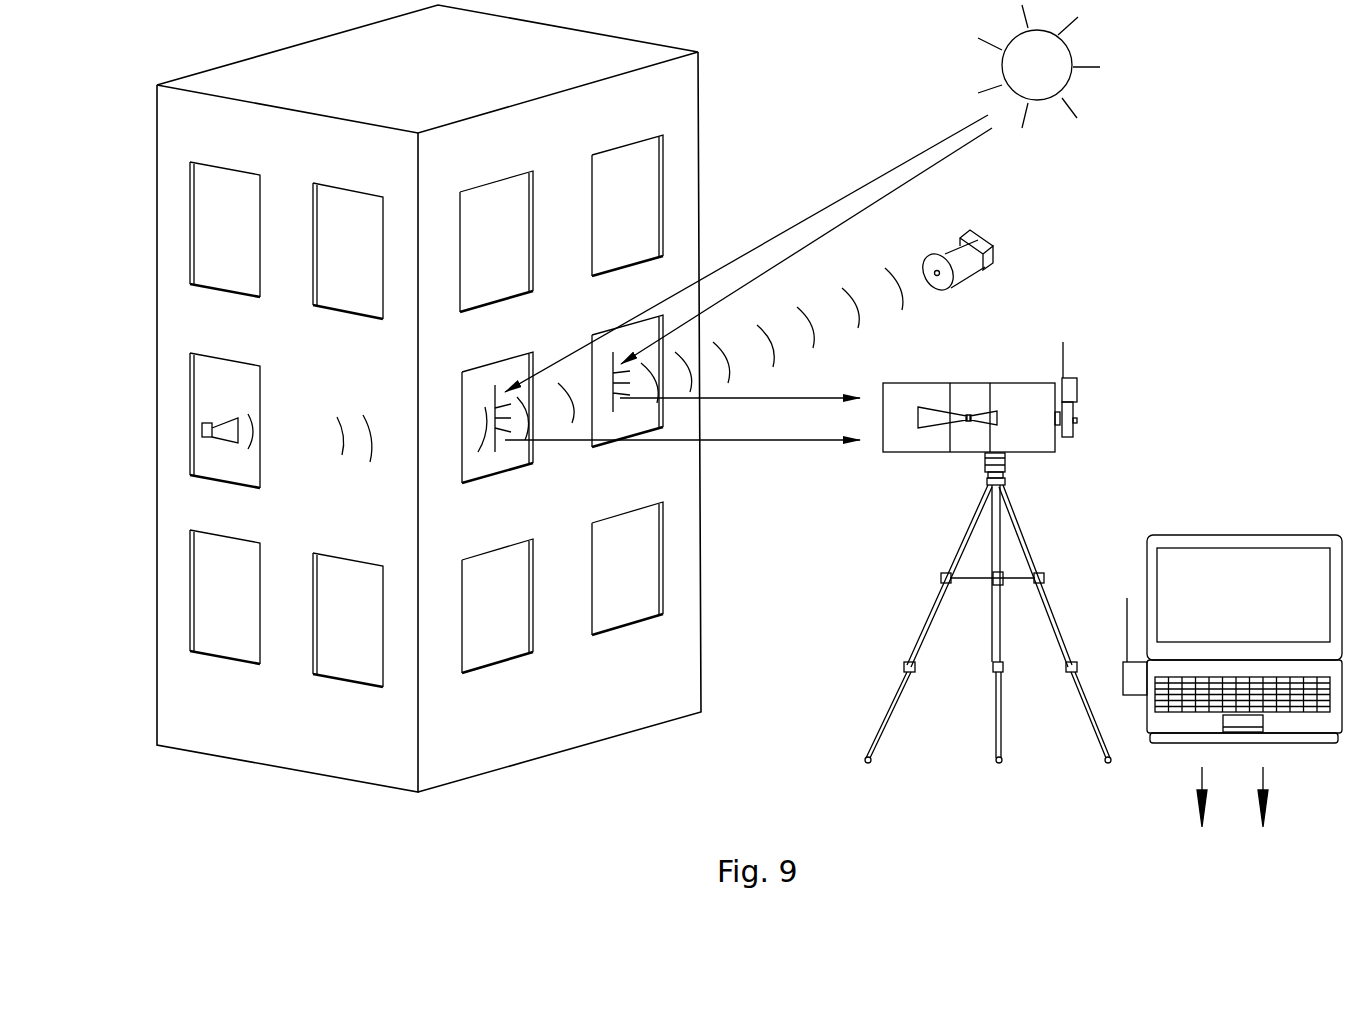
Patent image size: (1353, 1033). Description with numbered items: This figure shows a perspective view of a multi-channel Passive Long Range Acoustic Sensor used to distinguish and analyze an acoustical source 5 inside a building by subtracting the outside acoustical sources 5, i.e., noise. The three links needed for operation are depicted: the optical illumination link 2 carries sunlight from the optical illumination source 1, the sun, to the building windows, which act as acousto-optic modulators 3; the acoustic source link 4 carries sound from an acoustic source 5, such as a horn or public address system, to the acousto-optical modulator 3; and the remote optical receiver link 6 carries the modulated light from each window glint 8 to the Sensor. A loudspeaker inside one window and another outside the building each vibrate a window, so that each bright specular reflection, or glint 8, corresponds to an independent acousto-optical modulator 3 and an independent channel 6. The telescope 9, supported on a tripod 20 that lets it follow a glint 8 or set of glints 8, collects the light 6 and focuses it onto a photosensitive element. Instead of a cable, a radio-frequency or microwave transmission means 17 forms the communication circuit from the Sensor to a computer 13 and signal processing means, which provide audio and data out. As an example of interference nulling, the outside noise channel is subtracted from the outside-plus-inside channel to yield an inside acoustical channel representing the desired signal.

The optical illumination source 1 is at (1058, 73).
The optical illumination link 2 is at (887, 157).
The acousto-optic modulator 3 is at (486, 404).
The acoustic source link 4 is at (873, 270).
The acoustic source 5 is at (985, 238).
The remote optical receiver link 6 is at (760, 453).
The glint 8 is at (502, 423).
The telescope 9 is at (1025, 393).
The computer 13 is at (1193, 520).
The radio-frequency or microwave transmission means 17 is at (1090, 373).
The tripod 20 is at (922, 592).